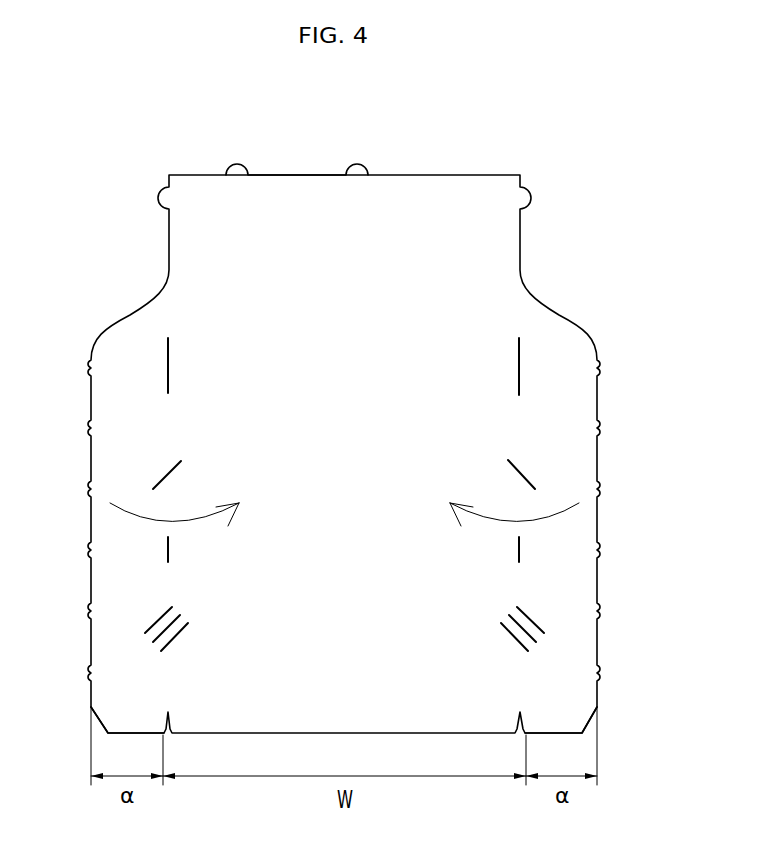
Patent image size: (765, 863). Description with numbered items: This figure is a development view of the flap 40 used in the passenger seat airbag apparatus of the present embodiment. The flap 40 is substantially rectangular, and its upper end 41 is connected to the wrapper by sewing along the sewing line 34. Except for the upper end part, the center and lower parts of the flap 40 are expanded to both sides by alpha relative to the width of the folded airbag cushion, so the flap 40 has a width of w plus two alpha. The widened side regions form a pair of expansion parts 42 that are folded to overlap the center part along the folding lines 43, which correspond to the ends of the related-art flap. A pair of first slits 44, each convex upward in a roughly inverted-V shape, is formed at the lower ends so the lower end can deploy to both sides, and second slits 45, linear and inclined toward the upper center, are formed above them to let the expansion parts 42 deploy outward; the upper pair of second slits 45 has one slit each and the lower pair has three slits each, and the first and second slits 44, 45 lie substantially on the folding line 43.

The flap 40 is at (490, 130).
The upper end 41 is at (307, 190).
The expansion parts 42 is at (113, 527).
The folding lines 43 is at (168, 377).
The sewing line 34 is at (166, 557).
The second slits 45 is at (160, 477).
The first slits 44 is at (165, 717).